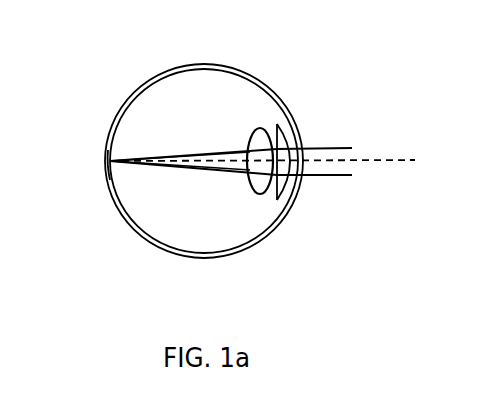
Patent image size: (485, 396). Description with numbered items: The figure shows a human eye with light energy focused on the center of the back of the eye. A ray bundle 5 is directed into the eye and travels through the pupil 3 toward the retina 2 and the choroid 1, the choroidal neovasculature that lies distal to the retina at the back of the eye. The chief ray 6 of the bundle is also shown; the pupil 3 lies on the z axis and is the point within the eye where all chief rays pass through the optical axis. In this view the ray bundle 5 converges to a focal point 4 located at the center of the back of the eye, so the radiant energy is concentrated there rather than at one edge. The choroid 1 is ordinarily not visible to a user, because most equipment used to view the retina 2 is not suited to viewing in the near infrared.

The choroid 1 is at (105, 137).
The retina 2 is at (108, 187).
The pupil 3 is at (278, 105).
The focal point 4 is at (111, 158).
The ray bundle 5 is at (318, 142).
The chief ray 6 is at (395, 150).